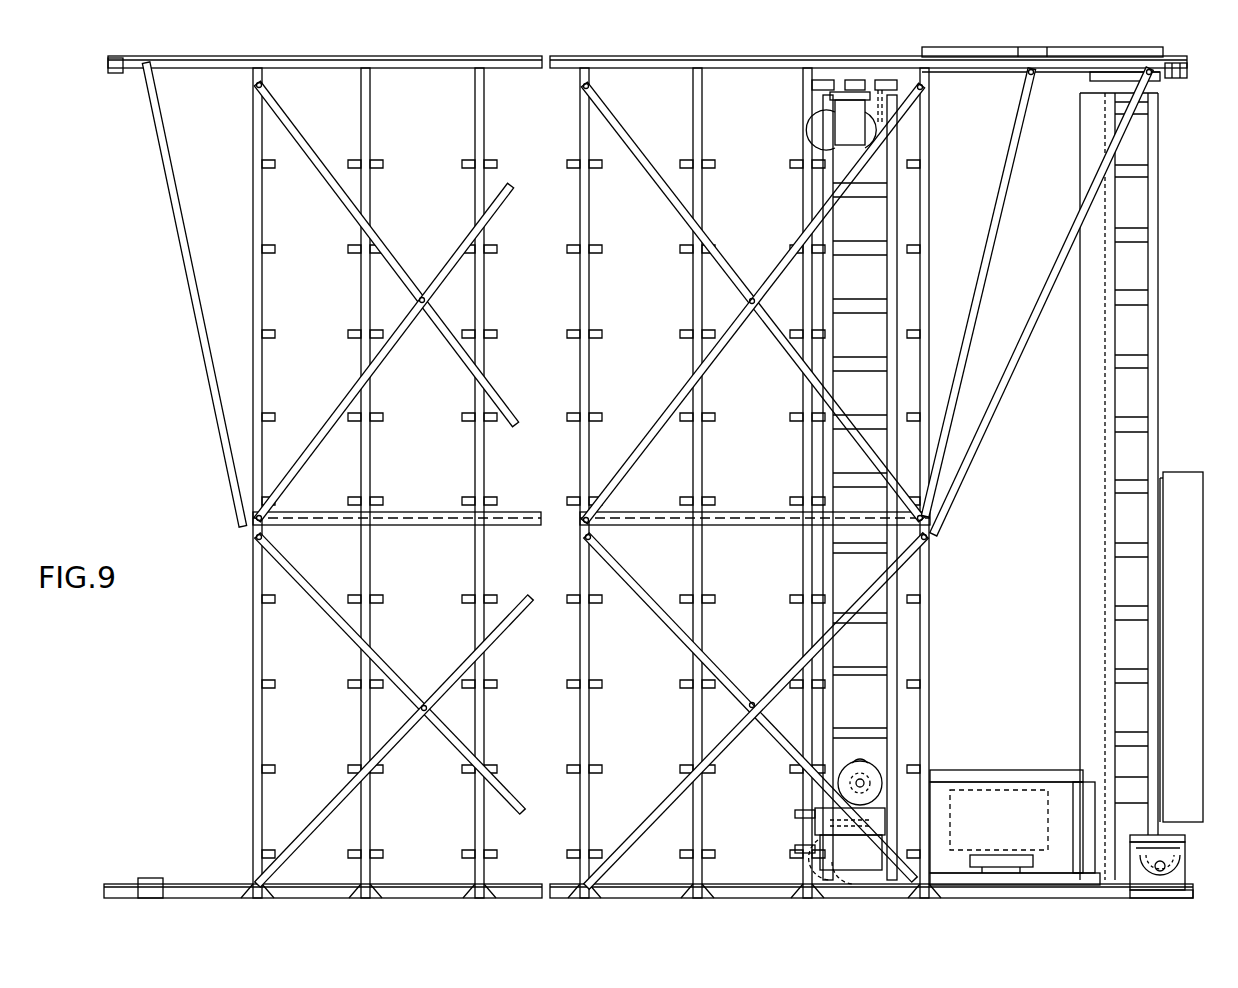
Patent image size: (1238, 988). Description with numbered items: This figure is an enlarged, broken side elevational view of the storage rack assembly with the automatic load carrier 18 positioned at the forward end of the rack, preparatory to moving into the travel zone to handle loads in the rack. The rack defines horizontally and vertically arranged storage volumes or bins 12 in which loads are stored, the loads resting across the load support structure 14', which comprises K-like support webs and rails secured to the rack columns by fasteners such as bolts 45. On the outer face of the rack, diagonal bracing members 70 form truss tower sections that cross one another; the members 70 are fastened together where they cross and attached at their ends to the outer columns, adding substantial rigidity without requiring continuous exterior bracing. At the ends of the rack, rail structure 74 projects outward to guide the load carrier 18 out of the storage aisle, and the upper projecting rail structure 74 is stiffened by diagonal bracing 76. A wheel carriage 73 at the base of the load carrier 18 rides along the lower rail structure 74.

The storage volumes or bins 12 is at (502, 460).
The load support structure 14' is at (591, 509).
The automatic load carrier 18 is at (1127, 284).
The bolts 45 is at (752, 298).
The diagonal bracing members 70 is at (452, 256).
The wheel carriage 73 is at (1172, 894).
The rail structure 74 is at (220, 58).
The diagonal bracing 76 is at (174, 196).